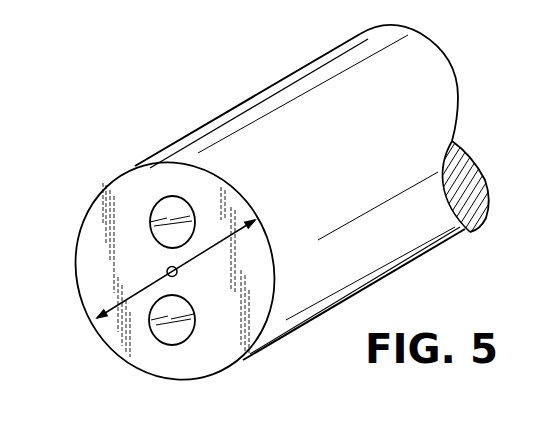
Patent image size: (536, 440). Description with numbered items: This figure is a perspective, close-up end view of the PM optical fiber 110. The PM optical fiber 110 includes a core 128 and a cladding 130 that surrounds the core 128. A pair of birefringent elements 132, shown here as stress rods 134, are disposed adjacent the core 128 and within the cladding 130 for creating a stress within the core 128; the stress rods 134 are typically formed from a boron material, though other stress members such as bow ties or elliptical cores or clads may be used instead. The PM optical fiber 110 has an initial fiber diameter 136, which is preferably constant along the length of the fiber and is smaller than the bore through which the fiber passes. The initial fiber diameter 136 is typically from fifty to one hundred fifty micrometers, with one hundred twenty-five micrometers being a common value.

The PM optical fiber 110 is at (291, 90).
The core 128 is at (96, 318).
The cladding 130 is at (104, 252).
The birefringent elements 132 is at (170, 326).
The stress rods 134 is at (153, 200).
The initial fiber diameter 136 is at (203, 262).